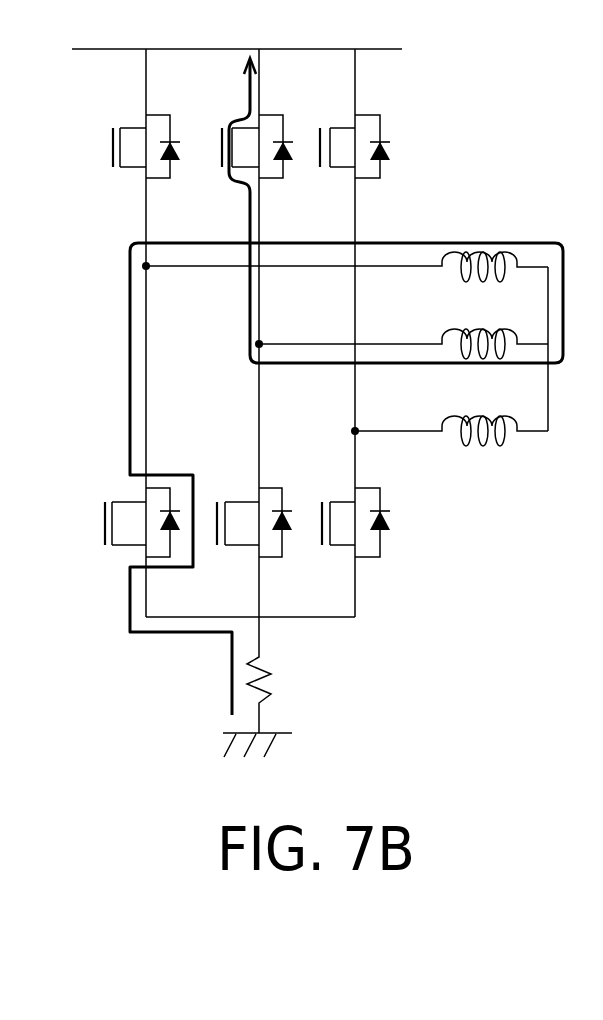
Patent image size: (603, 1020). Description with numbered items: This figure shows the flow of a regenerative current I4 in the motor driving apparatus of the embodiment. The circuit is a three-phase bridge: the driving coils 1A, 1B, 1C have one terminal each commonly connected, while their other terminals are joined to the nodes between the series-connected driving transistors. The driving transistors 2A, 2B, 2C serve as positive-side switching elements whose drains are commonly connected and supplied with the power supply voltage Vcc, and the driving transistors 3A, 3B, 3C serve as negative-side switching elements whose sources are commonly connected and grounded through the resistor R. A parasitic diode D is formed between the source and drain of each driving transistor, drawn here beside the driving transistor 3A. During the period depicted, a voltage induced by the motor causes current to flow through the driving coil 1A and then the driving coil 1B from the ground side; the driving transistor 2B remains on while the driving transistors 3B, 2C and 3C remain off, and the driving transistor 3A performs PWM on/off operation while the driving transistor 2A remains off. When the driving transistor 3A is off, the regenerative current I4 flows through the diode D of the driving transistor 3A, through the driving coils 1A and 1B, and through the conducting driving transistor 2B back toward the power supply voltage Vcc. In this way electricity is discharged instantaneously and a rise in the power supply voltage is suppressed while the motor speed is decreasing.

The power supply voltage Vcc is at (267, 51).
The driving transistor 2A is at (120, 128).
The driving transistor 2B is at (229, 126).
The driving transistor 2C is at (330, 128).
The driving transistor 3A is at (121, 511).
The driving transistor 3B is at (225, 502).
The driving transistor 3C is at (330, 502).
The driving coil 1A is at (485, 252).
The driving coil 1B is at (480, 358).
The driving coil 1C is at (482, 450).
The diode D is at (162, 522).
The resistor R is at (259, 687).
The regenerative current I4 is at (130, 345).